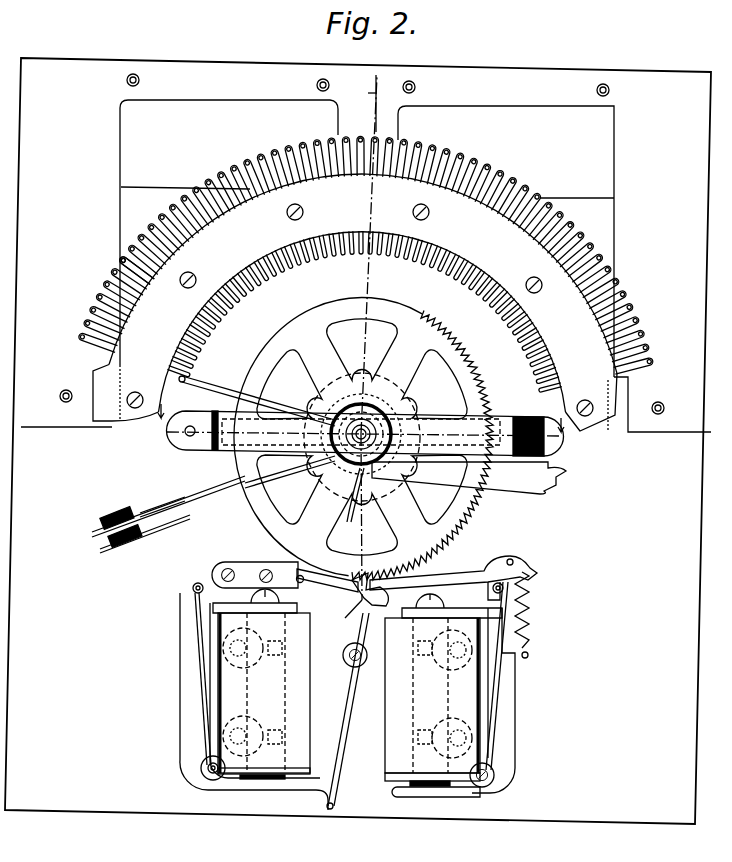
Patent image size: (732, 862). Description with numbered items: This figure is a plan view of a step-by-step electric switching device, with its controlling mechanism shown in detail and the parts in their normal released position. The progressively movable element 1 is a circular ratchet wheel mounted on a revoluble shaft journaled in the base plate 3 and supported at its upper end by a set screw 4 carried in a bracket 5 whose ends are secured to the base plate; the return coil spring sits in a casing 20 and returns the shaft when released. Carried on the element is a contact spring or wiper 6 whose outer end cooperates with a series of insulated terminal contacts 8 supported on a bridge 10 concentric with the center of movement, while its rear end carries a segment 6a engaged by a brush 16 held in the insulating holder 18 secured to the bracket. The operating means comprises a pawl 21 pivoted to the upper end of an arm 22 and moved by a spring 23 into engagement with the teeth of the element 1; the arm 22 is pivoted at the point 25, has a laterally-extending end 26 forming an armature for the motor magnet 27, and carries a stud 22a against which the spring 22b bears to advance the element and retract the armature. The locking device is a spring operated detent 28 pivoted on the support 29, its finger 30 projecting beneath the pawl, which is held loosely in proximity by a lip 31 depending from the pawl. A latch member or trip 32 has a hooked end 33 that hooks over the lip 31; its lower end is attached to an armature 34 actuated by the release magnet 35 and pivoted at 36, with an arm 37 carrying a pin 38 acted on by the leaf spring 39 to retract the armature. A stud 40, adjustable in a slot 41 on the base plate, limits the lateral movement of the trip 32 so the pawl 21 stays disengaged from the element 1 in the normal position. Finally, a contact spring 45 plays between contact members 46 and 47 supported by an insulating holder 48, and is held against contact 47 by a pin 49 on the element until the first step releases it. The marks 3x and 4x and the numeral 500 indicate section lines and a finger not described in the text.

The progressively movable element 1 is at (353, 436).
The base plate 3 is at (436, 306).
The section line 3x is at (365, 337).
The set screw 4 is at (368, 433).
The section line 4x is at (362, 428).
The bracket 5 is at (365, 433).
The contact spring or wiper 6 is at (220, 390).
The segment 6a is at (345, 504).
The insulated terminal contacts 8 is at (92, 336).
The bridge 10 is at (355, 302).
The brush 16 is at (513, 486).
The holder 18 is at (526, 417).
The casing 20 is at (362, 420).
The pawl 21 is at (463, 576).
The arm 22 is at (518, 684).
The stud 22a is at (495, 592).
The spring 22b is at (500, 698).
The spring 23 is at (530, 606).
The pivot point 25 is at (487, 787).
The laterally-extending end 26 is at (437, 798).
The motor magnet 27 is at (423, 714).
The spring operated detent 28 is at (330, 590).
The support 29 is at (246, 570).
The finger 30 is at (375, 578).
The lip 31 is at (449, 603).
The latch member or trip 32 is at (341, 728).
The end 33 is at (341, 618).
The armature 34 is at (287, 790).
The release magnet 35 is at (261, 684).
The pivot 36 is at (203, 776).
The arm 37 is at (193, 680).
The pin 38 is at (192, 590).
The leaf spring 39 is at (196, 620).
The stud 40 is at (357, 667).
The slot 41 is at (365, 646).
The contact spring 45 is at (178, 500).
The contact member 46 is at (158, 512).
The contact member 47 is at (166, 530).
The holder 48 is at (118, 546).
The pin 49 is at (250, 487).
The contact finger 500 is at (116, 265).